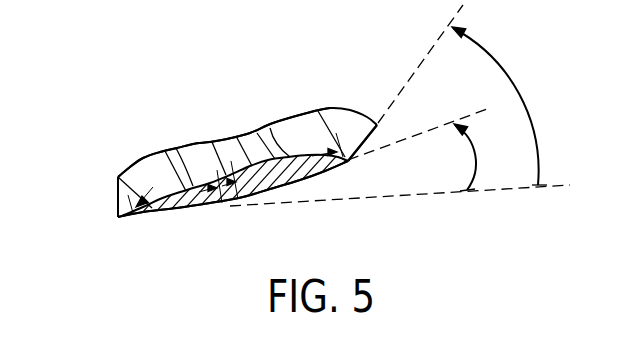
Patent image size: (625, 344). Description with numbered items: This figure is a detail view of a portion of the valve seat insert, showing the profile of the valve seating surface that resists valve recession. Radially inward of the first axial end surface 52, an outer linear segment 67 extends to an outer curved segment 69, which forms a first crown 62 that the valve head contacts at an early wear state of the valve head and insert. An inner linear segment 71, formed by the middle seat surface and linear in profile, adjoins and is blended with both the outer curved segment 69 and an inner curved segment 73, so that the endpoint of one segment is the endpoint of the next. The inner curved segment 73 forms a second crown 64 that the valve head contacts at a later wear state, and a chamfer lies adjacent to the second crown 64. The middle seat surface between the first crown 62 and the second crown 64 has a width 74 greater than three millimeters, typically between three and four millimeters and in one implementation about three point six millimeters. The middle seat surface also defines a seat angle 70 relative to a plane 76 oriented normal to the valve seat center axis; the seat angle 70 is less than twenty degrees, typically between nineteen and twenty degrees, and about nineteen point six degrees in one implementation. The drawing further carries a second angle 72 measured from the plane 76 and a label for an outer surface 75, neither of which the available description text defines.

The first axial end surface 52 is at (119, 218).
The first crown 62 is at (234, 213).
The second crown 64 is at (355, 171).
The outer linear segment 67 is at (180, 209).
The outer curved segment 69 is at (229, 205).
The seat angle 70 is at (425, 149).
The inner linear segment 71 is at (283, 186).
The second angle 72 is at (465, 95).
The inner curved segment 73 is at (346, 163).
The width 74 is at (270, 127).
The suction side surface 75 is at (162, 151).
The plane 76 is at (376, 198).